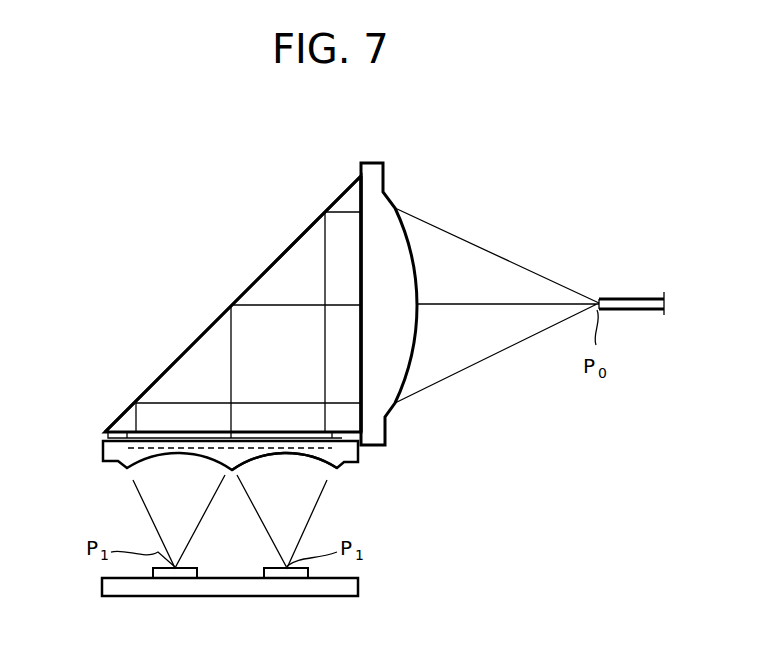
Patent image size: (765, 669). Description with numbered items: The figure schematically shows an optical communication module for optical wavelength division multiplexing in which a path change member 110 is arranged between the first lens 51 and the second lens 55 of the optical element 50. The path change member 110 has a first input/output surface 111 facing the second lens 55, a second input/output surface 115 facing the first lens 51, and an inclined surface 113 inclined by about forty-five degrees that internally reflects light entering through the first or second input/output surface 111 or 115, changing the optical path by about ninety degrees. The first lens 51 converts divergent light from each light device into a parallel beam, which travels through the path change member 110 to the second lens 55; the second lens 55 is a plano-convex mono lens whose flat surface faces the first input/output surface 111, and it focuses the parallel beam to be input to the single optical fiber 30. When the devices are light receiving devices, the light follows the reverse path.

The optical fiber 30 is at (628, 299).
The optical element 50 is at (358, 479).
The first lens 51 is at (358, 462).
The second lens 55 is at (409, 274).
The path change member 110 is at (177, 379).
The first input/output surface 111 is at (361, 200).
The inclined surface 113 is at (273, 264).
The second input/output surface 115 is at (103, 446).